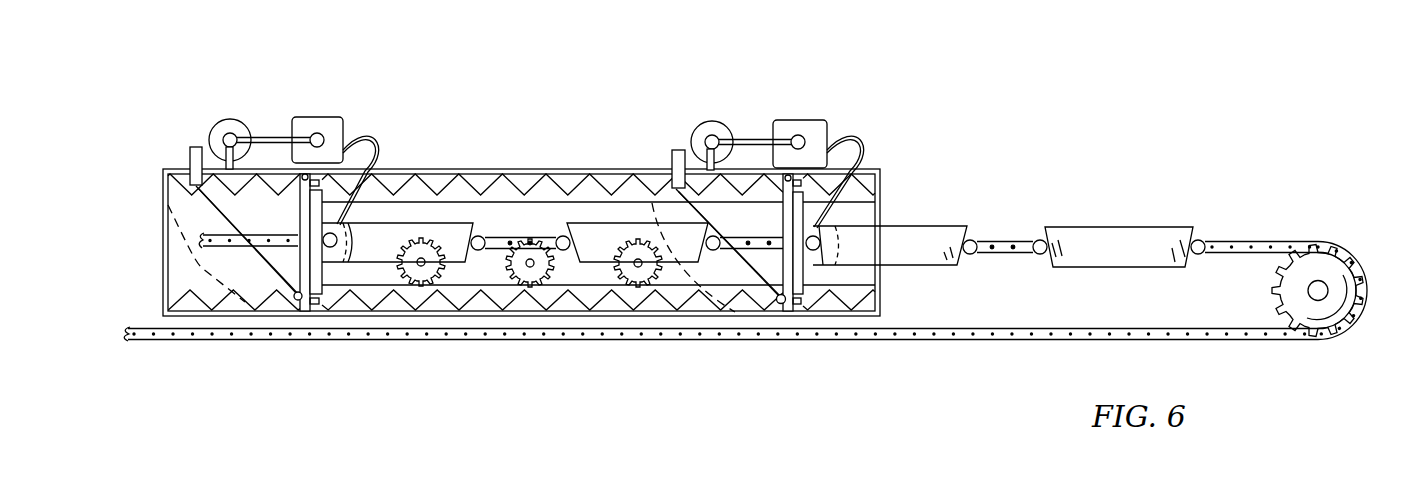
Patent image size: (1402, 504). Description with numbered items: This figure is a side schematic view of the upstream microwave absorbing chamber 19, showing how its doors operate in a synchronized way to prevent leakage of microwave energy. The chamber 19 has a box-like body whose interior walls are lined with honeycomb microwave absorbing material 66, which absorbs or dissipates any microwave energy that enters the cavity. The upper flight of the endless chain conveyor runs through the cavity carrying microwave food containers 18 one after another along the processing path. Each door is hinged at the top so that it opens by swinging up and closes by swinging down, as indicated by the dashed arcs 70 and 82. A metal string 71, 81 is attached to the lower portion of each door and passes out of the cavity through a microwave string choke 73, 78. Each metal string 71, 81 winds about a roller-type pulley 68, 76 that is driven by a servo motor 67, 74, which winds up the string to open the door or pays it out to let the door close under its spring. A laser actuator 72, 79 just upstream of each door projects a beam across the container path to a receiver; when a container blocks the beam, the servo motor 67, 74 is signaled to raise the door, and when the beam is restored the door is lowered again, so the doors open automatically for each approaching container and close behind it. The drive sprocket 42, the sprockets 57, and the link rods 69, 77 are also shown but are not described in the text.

The microwave food containers 18 is at (907, 270).
The upstream microwave absorbing chamber 19 is at (529, 158).
The drive sprocket 42 is at (1266, 241).
The sprocket 57 is at (421, 270).
The honeycomb microwave absorbing material 66 is at (400, 184).
The servo motor 67 is at (807, 118).
The roller-type pulley 68 is at (712, 120).
The link rod 69 is at (748, 138).
The dashed arc 70 is at (708, 322).
The metal string 71 is at (750, 272).
The laser actuator 72 is at (860, 235).
The microwave string choke 73 is at (671, 157).
The servo motor 74 is at (330, 117).
The roller-type pulley 76 is at (232, 120).
The link rod 77 is at (267, 137).
The microwave string choke 78 is at (189, 150).
The laser actuator 79 is at (330, 262).
The metal string 81 is at (262, 268).
The dashed arc 82 is at (176, 278).